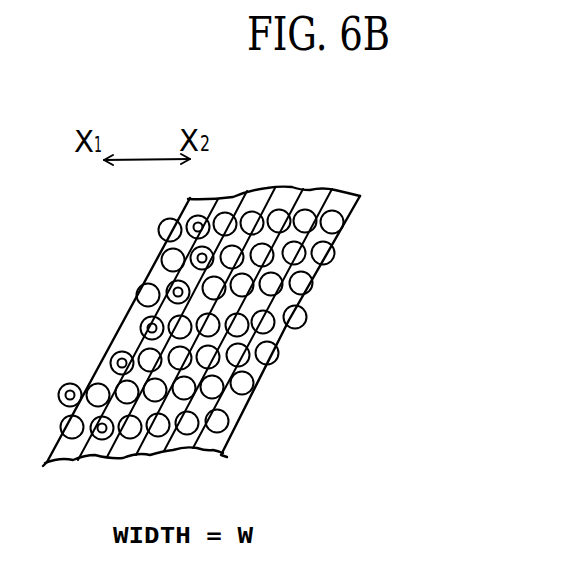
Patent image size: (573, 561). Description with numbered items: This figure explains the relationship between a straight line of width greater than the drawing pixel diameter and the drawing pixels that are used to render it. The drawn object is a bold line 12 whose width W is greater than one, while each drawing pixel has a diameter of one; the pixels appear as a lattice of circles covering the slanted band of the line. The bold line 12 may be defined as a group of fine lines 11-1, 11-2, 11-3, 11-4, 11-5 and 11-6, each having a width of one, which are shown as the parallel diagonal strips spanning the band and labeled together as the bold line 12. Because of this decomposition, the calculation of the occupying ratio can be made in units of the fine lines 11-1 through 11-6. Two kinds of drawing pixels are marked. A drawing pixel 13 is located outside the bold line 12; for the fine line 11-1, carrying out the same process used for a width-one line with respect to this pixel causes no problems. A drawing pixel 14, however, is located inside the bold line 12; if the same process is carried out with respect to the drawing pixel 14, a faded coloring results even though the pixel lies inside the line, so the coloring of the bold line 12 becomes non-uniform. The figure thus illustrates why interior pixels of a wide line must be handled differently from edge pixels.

The fine line 11-1 is at (207, 198).
The fine line 11-2 is at (237, 194).
The fine line 11-3 is at (270, 188).
The fine line 11-4 is at (304, 191).
The fine line 11-5 is at (340, 207).
The fine line 11-6 is at (350, 223).
The bold line 12 is at (430, 100).
The drawing pixel 13 is at (68, 384).
The drawing pixel 14 is at (187, 222).